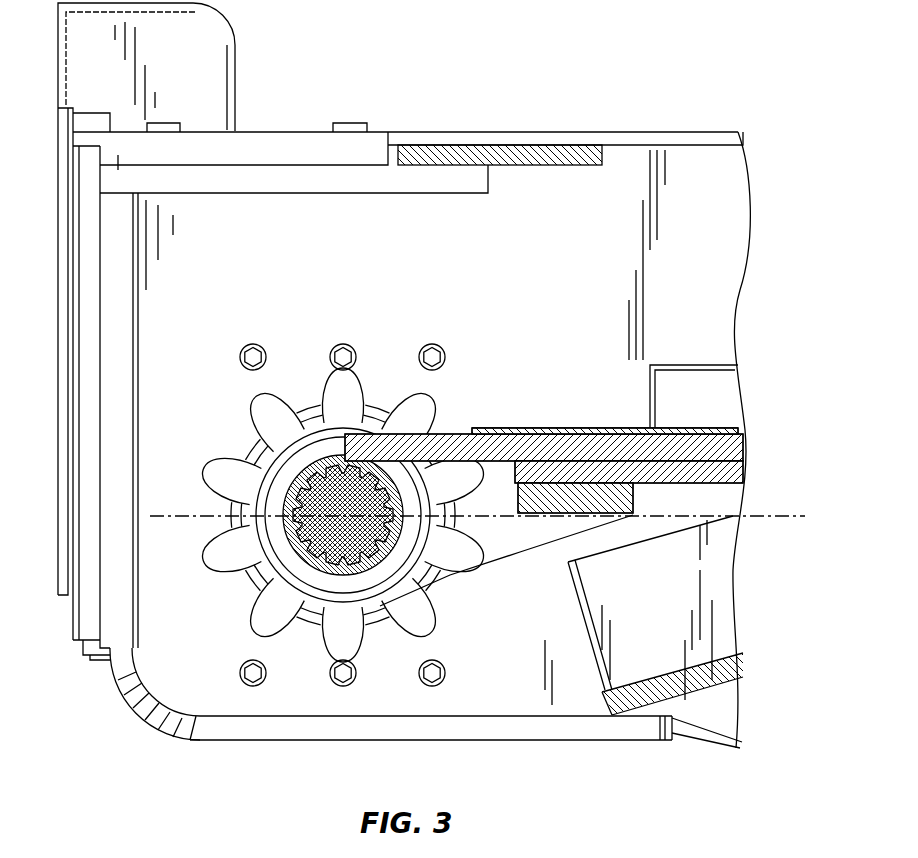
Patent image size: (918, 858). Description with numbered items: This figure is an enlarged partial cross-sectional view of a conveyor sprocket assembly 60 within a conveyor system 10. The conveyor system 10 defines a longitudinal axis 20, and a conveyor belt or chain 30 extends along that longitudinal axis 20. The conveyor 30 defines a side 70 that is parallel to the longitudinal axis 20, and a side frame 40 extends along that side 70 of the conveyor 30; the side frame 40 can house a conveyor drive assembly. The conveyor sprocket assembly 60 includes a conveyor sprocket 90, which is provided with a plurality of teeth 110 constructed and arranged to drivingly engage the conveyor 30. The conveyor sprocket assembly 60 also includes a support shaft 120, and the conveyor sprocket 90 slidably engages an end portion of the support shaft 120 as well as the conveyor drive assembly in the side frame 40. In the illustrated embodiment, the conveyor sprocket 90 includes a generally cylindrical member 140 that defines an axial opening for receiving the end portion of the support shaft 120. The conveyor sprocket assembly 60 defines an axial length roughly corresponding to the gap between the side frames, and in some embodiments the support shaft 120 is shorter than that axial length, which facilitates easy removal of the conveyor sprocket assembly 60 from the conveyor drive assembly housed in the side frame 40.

The conveyor system 10 is at (181, 768).
The longitudinal axis 20 is at (752, 516).
The conveyor belt or chain 30 is at (455, 433).
The side frame 40 is at (288, 145).
The conveyor sprocket assembly 60 is at (231, 608).
The side of the conveyor 70 is at (541, 266).
The conveyor sprocket 90 is at (232, 391).
The teeth 110 is at (407, 398).
The support shaft 120 is at (352, 535).
The generally cylindrical member 140 is at (403, 541).